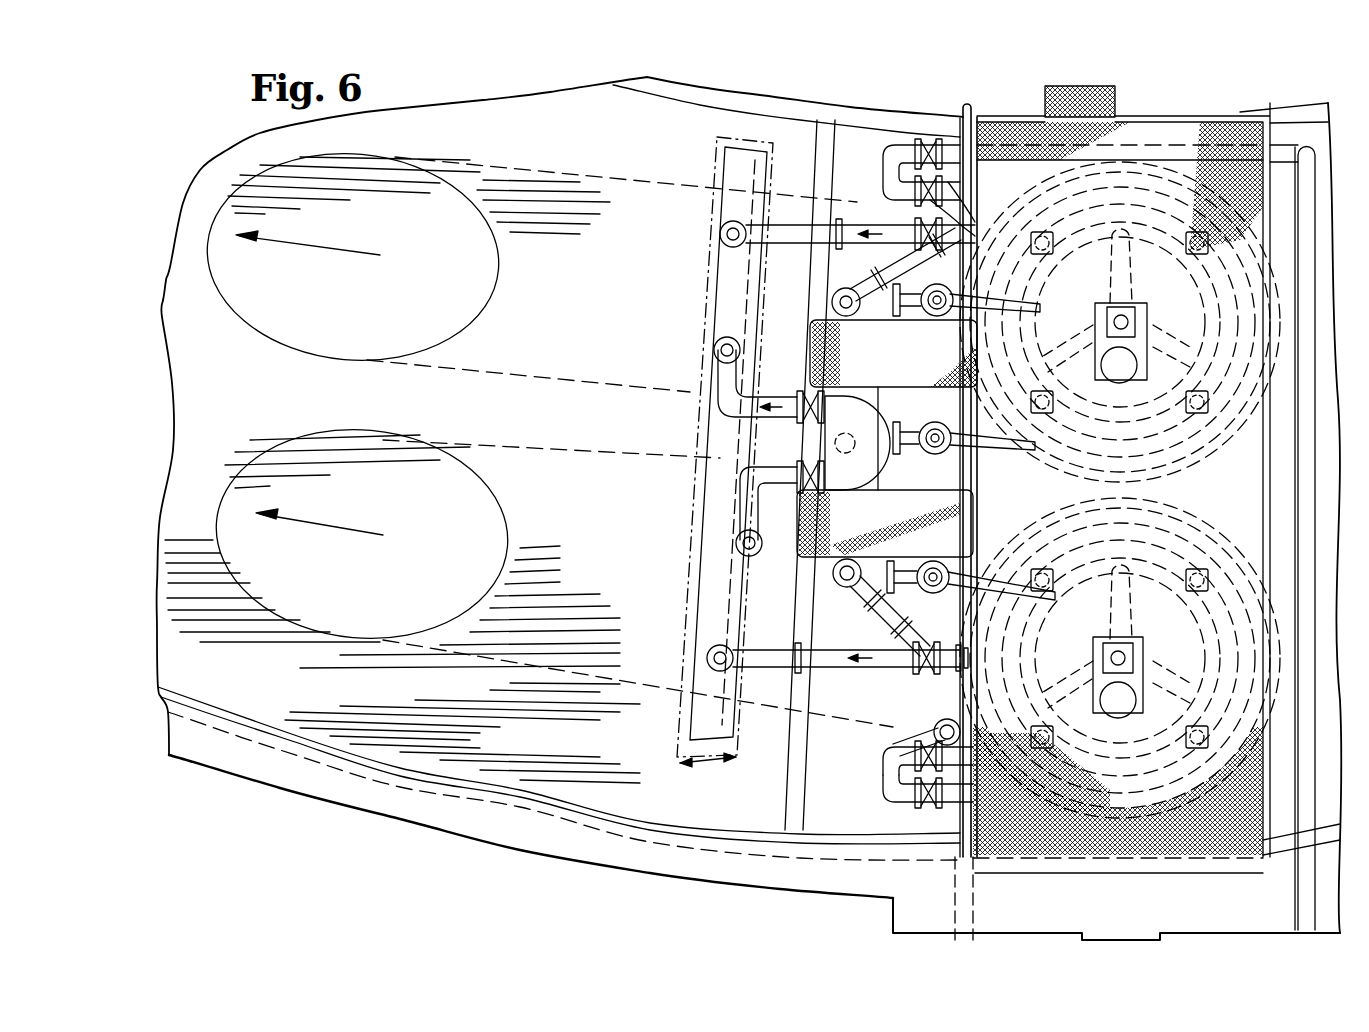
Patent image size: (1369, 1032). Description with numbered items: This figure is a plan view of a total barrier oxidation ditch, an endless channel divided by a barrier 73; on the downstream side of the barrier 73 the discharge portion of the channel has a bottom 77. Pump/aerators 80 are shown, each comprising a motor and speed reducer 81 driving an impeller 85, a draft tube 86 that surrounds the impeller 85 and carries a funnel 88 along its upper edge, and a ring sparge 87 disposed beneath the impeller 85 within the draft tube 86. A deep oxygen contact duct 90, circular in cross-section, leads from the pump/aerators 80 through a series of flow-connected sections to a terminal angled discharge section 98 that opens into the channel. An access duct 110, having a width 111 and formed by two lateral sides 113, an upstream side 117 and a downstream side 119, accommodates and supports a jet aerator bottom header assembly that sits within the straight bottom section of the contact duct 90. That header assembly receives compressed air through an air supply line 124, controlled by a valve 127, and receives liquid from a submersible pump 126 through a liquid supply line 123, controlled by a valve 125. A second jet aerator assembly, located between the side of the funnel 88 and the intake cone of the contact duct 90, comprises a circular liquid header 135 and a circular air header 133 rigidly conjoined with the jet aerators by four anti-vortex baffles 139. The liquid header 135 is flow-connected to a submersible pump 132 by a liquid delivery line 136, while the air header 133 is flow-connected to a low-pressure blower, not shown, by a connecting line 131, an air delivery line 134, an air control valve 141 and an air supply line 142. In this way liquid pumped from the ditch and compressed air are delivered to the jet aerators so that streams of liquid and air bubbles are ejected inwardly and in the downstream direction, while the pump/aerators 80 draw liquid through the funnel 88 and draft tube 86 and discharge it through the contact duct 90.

The barrier 73 is at (797, 770).
The bottom 77 is at (584, 519).
The pump/aerator 80 is at (1232, 447).
The motor and speed reducer 81 is at (1140, 305).
The impeller 85 is at (1056, 355).
The draft tube 86 is at (1210, 315).
The ring sparge 87 is at (1172, 245).
The funnel 88 is at (1220, 289).
The deep oxygen contact duct 90 is at (642, 468).
The terminal angled discharge section 98 is at (380, 301).
The access duct 110 is at (702, 343).
The width 111 is at (704, 762).
The lateral sides 113 is at (745, 455).
The upstream side 117 is at (758, 562).
The downstream side 119 is at (708, 658).
The liquid supply line 123 is at (745, 512).
The air supply line 124 is at (858, 650).
The valve 125 is at (824, 440).
The submersible pump 126 is at (935, 422).
The valve 127 is at (930, 670).
The connecting line 131 is at (958, 718).
The submersible pump 132 is at (930, 594).
The circular air header 133 is at (958, 682).
The air delivery line 134 is at (922, 728).
The circular liquid header 135 is at (1296, 592).
The liquid delivery line 136 is at (856, 590).
The anti-vortex baffles 139 is at (1020, 545).
The air control valve 141 is at (925, 800).
The air supply line 142 is at (968, 790).